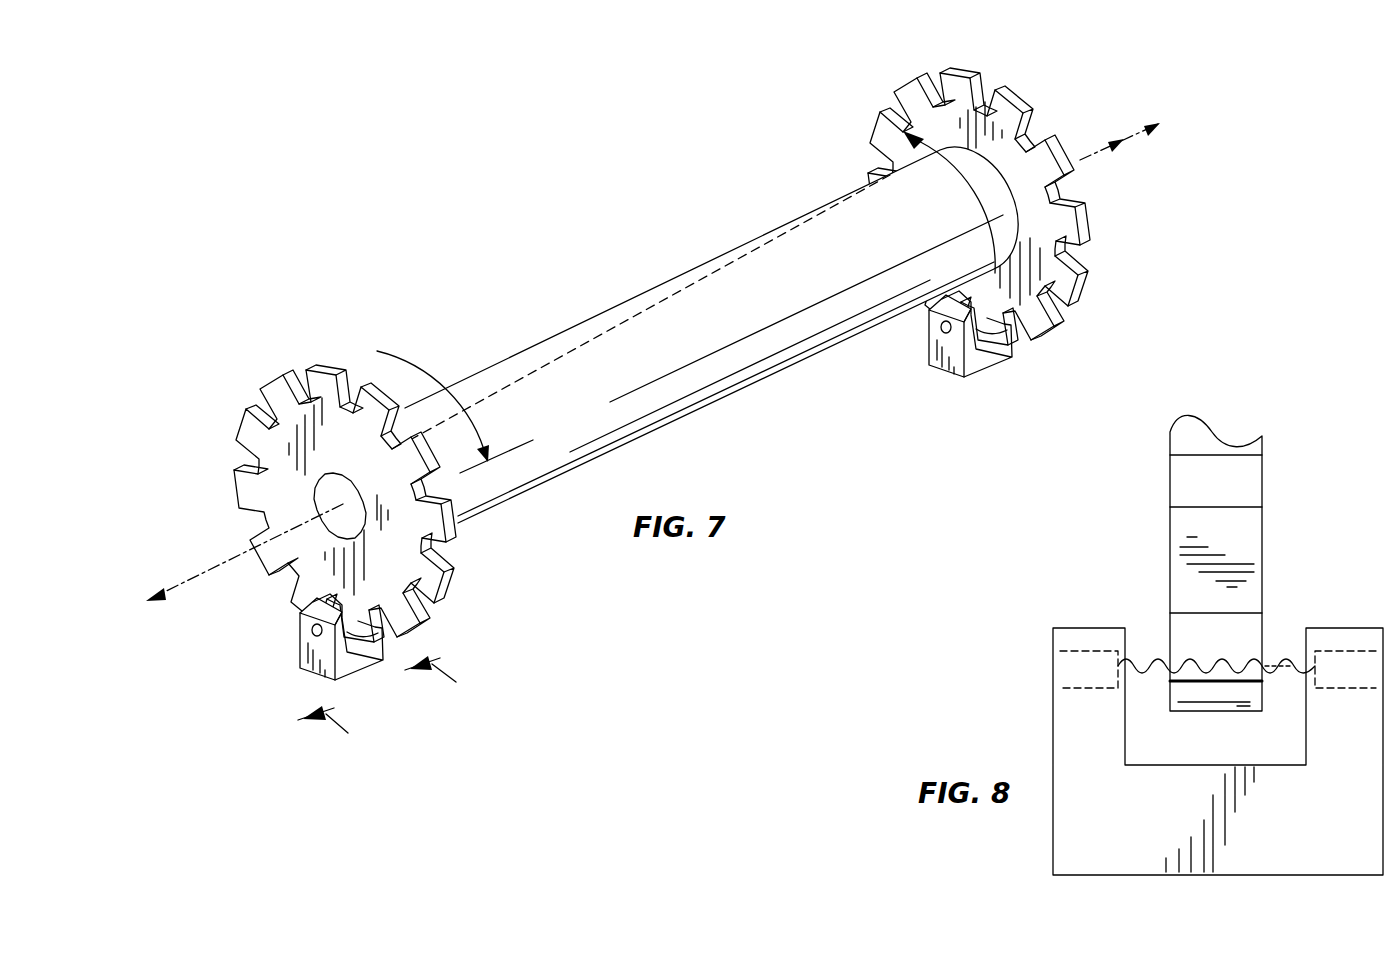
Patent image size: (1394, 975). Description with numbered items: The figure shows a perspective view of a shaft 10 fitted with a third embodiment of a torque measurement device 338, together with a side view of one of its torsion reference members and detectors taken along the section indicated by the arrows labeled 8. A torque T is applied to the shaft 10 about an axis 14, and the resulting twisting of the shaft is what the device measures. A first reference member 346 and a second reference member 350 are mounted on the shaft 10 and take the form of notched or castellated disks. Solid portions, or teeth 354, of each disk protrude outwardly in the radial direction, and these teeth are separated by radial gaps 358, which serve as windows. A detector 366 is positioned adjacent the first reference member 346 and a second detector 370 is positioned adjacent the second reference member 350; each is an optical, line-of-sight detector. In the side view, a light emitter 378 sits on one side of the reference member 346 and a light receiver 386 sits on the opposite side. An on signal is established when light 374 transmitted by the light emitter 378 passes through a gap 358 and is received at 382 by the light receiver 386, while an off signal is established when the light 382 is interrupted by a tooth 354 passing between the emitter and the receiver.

In FIG. 7, the shaft 10 is at (610, 315).
In FIG. 7, the axis 14 is at (170, 586).
In FIG. 7, the torque measurement device 338 is at (376, 206).
In FIG. 7, the first reference member 346 is at (292, 500).
In FIG. 8, the first reference member 346 is at (1270, 558).
In FIG. 7, the second reference member 350 is at (890, 100).
In FIG. 7, the teeth 354 is at (287, 393).
In FIG. 7, the radial gaps 358 is at (268, 412).
In FIG. 8, the radial gaps 358 is at (1229, 640).
In FIG. 7, the detector 366 is at (345, 665).
In FIG. 8, the detector 366 is at (1250, 845).
In FIG. 7, the detector 370 is at (932, 372).
In FIG. 8, the light 374 is at (1155, 677).
In FIG. 8, the light emitter 378 is at (1086, 669).
In FIG. 8, the received light 382 is at (1279, 670).
In FIG. 8, the light receiver 386 is at (1342, 660).
In FIG. 7, the section line 8 is at (384, 701).